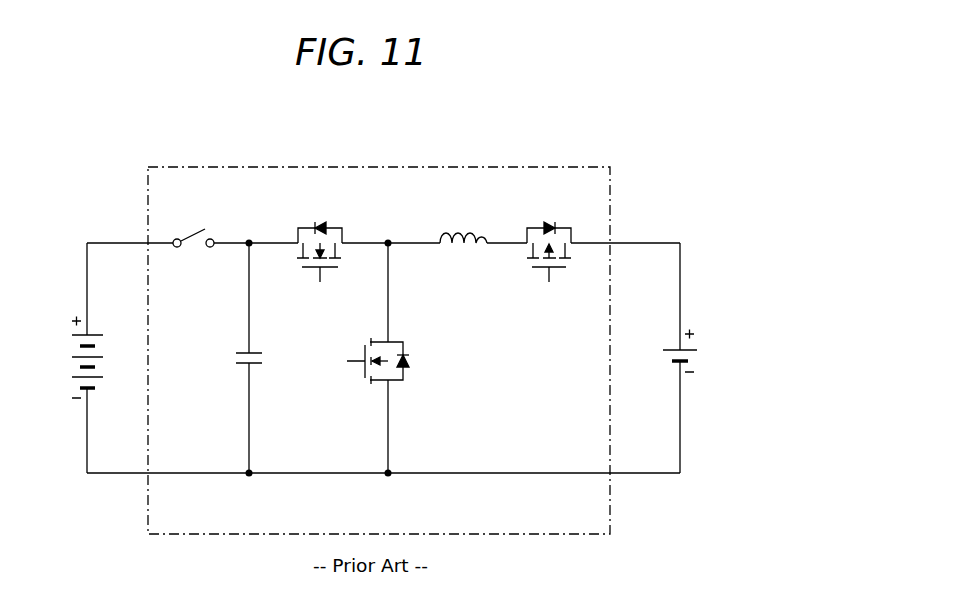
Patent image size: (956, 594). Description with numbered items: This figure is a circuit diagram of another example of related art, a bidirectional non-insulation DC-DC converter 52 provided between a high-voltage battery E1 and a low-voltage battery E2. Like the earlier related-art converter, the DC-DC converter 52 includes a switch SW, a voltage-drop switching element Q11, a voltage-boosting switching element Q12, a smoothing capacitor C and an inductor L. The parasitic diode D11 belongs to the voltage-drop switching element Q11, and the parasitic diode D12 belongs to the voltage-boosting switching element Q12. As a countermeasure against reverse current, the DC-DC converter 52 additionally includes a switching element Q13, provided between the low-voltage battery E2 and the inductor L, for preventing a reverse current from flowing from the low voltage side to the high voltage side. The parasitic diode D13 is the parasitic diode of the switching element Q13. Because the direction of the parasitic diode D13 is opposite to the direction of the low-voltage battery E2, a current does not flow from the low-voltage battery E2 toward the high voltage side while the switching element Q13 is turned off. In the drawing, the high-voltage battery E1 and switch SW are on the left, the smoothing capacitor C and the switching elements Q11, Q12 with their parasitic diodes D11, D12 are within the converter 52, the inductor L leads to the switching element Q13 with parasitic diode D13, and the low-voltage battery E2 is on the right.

The DC-DC converter 52 is at (443, 167).
The switch SW is at (193, 228).
The high-voltage battery E1 is at (70, 358).
The low-voltage battery E2 is at (667, 351).
The smoothing capacitor C is at (257, 360).
The inductor L is at (463, 226).
The voltage-drop switching element Q11 is at (310, 268).
The voltage-boosting switching element Q12 is at (367, 350).
The switching element Q13 is at (541, 268).
The parasitic diode D11 is at (320, 223).
The parasitic diode D12 is at (417, 361).
The parasitic diode D13 is at (549, 223).